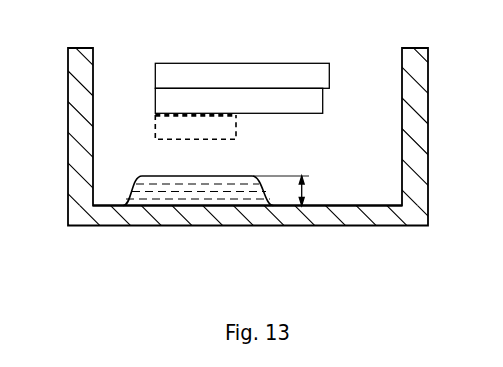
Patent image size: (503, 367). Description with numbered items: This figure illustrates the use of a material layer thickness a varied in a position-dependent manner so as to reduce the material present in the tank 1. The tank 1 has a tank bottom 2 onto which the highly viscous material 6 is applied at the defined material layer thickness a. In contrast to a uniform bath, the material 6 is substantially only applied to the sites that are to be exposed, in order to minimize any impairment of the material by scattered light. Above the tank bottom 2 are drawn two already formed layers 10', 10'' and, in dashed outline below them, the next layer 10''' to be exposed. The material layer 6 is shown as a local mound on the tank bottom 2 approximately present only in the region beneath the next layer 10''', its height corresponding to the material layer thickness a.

The tank 1 is at (74, 60).
The tank bottom 2 is at (364, 198).
The material 6 is at (144, 180).
The material layer thickness a is at (286, 191).
The layer 10' is at (273, 74).
The layer 10'' is at (276, 100).
The next layer to be exposed 10''' is at (245, 129).